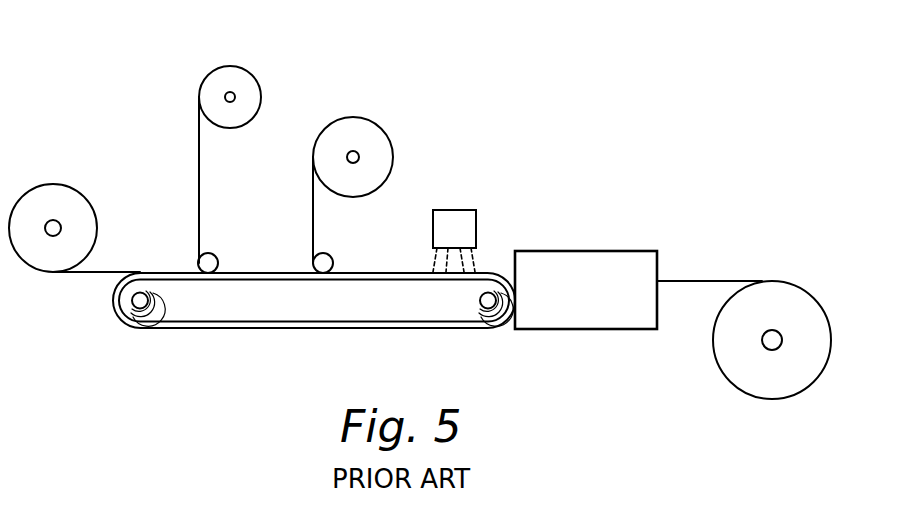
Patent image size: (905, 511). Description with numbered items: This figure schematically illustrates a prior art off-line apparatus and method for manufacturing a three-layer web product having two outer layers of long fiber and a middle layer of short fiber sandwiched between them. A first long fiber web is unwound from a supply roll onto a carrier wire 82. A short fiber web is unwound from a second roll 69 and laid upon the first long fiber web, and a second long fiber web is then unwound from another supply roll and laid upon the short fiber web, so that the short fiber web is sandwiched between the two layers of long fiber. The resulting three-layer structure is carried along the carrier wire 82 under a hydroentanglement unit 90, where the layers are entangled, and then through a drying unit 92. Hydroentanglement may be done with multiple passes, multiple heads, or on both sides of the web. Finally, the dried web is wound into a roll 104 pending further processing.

The second roll 69 is at (261, 97).
The carrier wire 82 is at (110, 272).
The hydroentanglement unit 90 is at (476, 228).
The drying unit 92 is at (587, 251).
The roll 104 is at (713, 349).